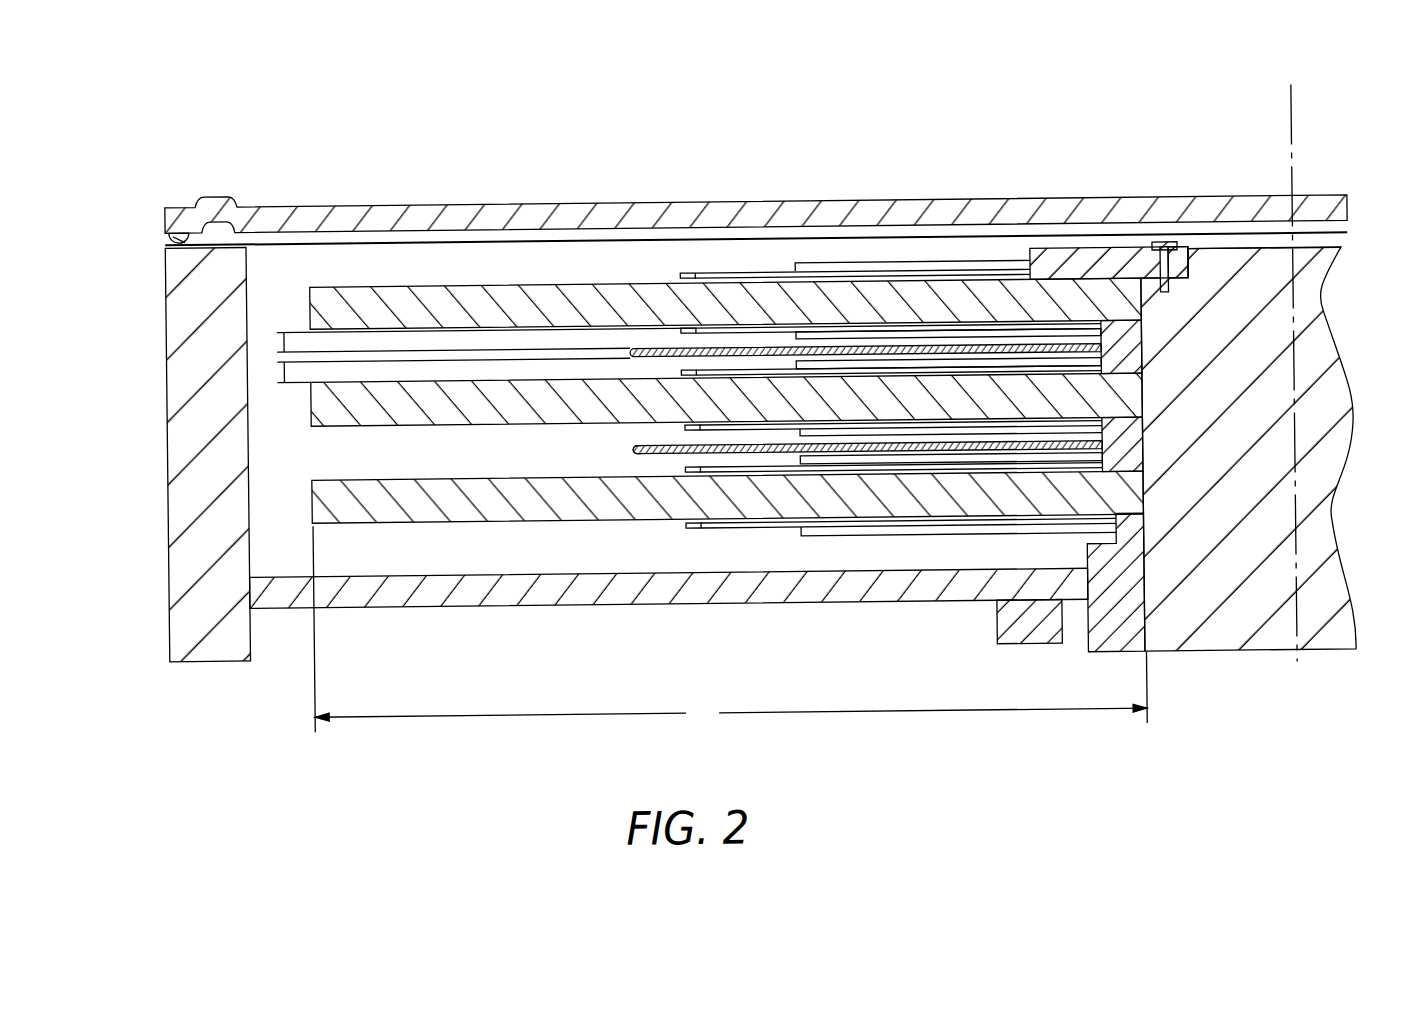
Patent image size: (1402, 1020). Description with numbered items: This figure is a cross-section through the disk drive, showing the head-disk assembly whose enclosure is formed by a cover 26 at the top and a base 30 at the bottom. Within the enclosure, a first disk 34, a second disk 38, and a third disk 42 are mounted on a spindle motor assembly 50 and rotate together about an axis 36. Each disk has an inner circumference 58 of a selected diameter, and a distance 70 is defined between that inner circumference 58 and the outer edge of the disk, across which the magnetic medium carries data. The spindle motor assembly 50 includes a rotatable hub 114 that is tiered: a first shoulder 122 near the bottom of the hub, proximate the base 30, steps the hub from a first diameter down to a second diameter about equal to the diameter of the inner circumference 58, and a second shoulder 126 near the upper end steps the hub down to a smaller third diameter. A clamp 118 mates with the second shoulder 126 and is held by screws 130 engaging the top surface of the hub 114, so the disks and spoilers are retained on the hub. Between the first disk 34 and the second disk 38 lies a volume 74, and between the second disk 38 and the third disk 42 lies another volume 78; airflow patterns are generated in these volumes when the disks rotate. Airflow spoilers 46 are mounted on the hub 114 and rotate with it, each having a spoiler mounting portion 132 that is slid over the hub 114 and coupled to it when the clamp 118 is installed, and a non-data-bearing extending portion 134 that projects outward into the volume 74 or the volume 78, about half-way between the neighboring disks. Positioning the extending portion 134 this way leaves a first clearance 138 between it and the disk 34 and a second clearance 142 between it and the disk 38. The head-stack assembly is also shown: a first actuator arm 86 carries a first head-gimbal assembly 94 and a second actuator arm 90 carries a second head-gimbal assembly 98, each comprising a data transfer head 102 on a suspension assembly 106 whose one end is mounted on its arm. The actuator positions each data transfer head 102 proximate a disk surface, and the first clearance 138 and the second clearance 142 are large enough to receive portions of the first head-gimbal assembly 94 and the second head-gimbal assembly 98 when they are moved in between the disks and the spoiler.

The cover 26 is at (768, 202).
The base 30 is at (194, 557).
The first disk 34 is at (311, 301).
The axis 36 is at (1295, 106).
The second disk 38 is at (311, 396).
The third disk 42 is at (312, 494).
The airflow spoiler 46 is at (659, 335).
The spindle motor assembly 50 is at (1091, 639).
The inner circumference 58 is at (1144, 307).
The distance 70 is at (730, 624).
The volume 74 is at (463, 340).
The volume 78 is at (566, 458).
The first actuator arm 86 is at (889, 340).
The second actuator arm 90 is at (976, 353).
The first head-gimbal assembly 94 is at (689, 330).
The second head-gimbal assembly 98 is at (656, 371).
The data transfer head 102 is at (693, 328).
The suspension assembly 106 is at (731, 368).
The rotatable hub 114 is at (1307, 262).
The clamp 118 is at (1139, 355).
The first shoulder 122 is at (1119, 513).
The second shoulder 126 is at (1192, 273).
The screws 130 is at (1170, 250).
The spoiler mounting portion 132 is at (1103, 324).
The extending portion 134 is at (640, 454).
The first clearance 138 is at (284, 338).
The second clearance 142 is at (284, 368).